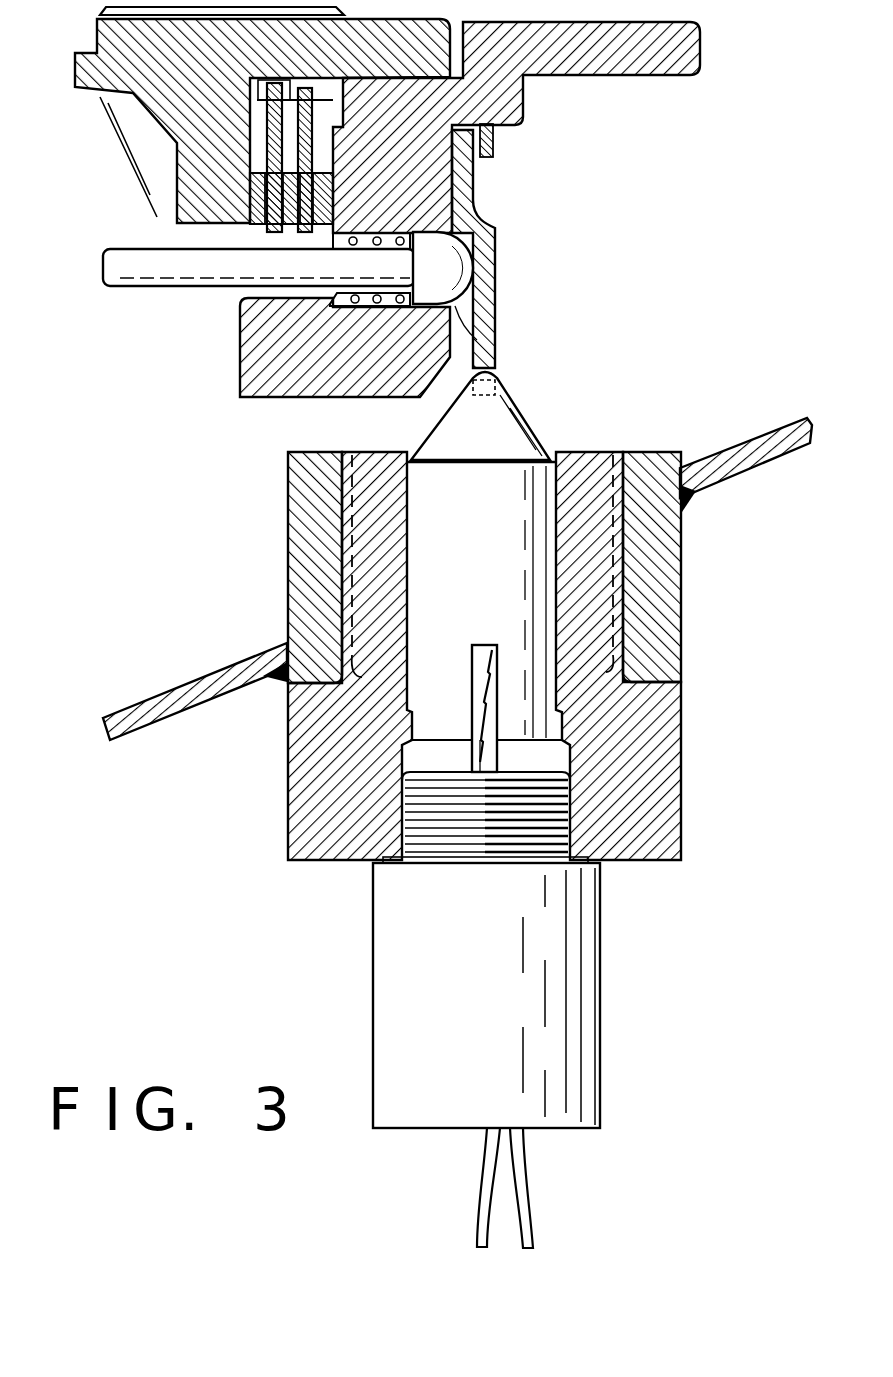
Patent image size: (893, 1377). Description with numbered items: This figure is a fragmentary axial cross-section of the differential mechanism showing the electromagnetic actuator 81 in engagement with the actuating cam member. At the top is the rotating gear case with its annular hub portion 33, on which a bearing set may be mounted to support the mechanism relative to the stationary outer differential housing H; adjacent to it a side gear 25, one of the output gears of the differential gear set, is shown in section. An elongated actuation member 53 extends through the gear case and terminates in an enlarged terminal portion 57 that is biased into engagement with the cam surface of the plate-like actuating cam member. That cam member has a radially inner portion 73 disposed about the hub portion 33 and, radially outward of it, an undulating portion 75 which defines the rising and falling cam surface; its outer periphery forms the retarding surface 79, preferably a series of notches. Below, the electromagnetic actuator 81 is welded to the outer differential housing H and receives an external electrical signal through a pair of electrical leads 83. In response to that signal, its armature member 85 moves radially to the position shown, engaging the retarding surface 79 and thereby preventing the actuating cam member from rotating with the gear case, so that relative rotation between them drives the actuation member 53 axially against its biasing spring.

The side gear 25 is at (163, 93).
The annular hub portion 33 is at (572, 52).
The actuation member 53 is at (190, 278).
The terminal portion 57 is at (445, 270).
The radially inner portion 73 is at (463, 180).
The undulating portion 75 is at (483, 308).
The retarding surface 79 is at (512, 392).
The electromagnetic actuator 81 is at (276, 575).
The electrical leads 83 is at (483, 1223).
The armature member 85 is at (540, 457).
The outer differential housing H is at (192, 686).